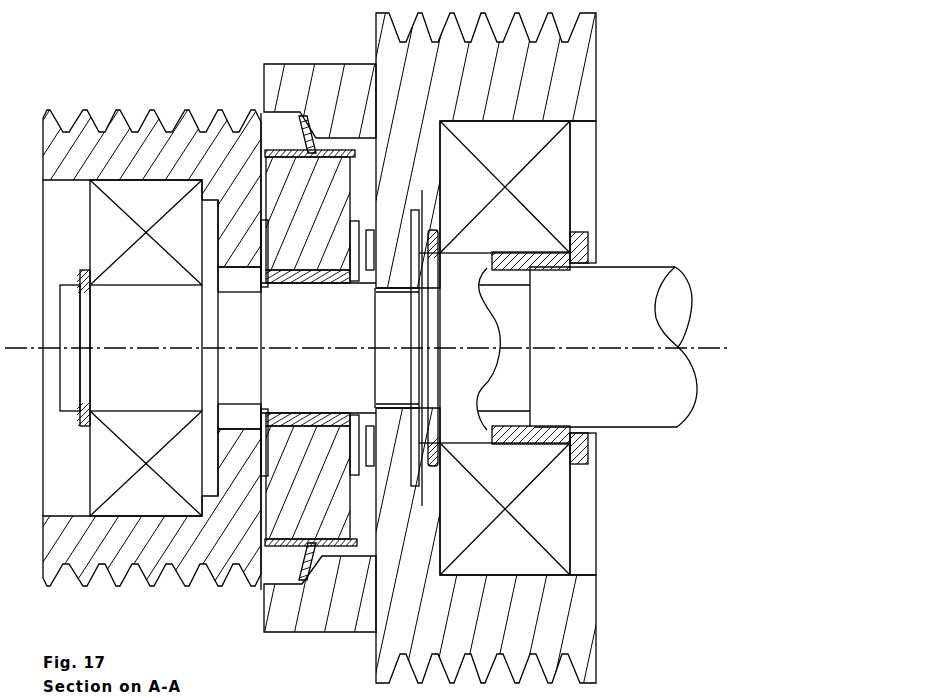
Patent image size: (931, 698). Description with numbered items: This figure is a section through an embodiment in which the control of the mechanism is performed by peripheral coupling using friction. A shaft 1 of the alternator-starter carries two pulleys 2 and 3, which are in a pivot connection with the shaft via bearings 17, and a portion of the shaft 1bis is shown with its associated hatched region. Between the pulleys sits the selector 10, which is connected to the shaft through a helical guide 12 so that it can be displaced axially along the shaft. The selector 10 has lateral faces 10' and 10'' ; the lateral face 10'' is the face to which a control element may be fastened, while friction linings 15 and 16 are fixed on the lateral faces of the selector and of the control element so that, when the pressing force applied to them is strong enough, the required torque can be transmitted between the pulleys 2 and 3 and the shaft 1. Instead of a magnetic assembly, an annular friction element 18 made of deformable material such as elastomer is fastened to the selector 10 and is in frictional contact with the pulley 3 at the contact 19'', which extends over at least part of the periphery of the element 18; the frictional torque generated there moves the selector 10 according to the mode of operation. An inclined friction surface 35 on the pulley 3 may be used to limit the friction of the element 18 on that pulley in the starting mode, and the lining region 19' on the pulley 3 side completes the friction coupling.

The shaft 1 is at (587, 370).
The shaft key / hub section 1bis is at (516, 395).
The pulley 2 is at (175, 300).
The pulley 3 is at (431, 348).
The selector 10 is at (277, 312).
The lateral face of the selector 10' is at (241, 348).
The lateral face of the selector 10'' is at (306, 348).
The helical guide 12 is at (204, 447).
The friction lining 15 is at (180, 527).
The friction lining 16 is at (506, 408).
The bearing 17 is at (123, 300).
The annular friction element 18 is at (294, 594).
The friction lining 19' is at (602, 348).
The contact 19'' is at (292, 89).
The inclined friction surface 35 is at (454, 581).